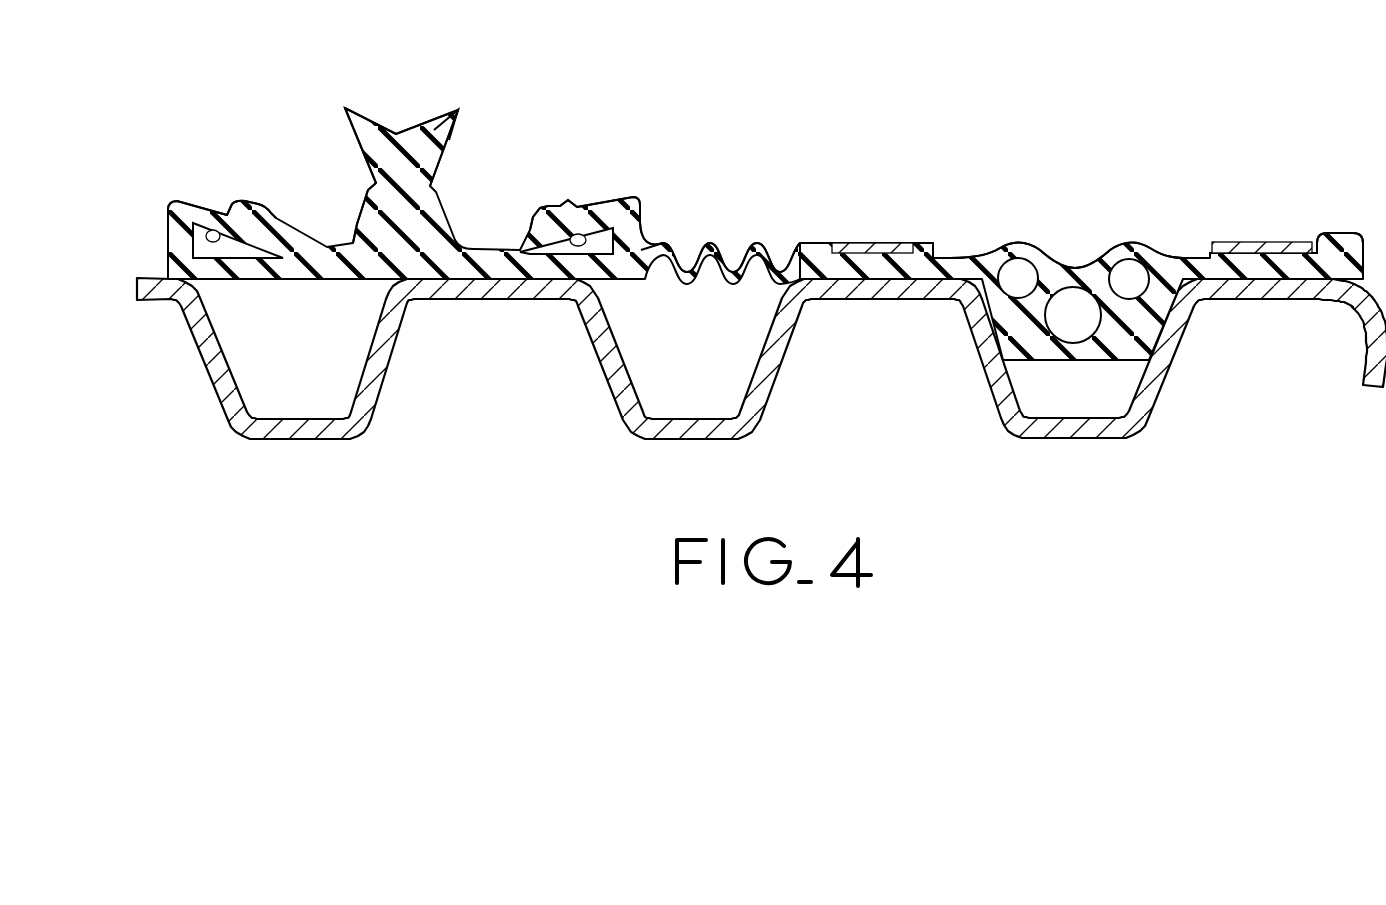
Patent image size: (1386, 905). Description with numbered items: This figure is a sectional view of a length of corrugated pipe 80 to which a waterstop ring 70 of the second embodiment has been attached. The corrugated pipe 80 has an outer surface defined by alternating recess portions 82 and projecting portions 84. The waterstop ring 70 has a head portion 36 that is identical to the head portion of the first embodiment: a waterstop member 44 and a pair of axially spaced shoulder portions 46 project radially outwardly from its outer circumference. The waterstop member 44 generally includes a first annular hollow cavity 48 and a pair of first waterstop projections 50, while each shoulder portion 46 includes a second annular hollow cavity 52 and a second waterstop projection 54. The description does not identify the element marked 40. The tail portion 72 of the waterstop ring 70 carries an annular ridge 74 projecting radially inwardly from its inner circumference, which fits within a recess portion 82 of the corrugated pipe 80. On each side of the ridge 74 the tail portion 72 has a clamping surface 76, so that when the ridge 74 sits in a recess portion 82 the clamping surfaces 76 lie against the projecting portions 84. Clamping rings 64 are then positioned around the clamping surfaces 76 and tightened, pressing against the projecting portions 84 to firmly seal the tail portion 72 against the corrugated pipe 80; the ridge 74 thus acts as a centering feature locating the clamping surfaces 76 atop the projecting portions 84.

The head portion 36 is at (284, 170).
The corrugated web section 40 is at (742, 240).
The waterstop member 44 is at (397, 132).
The shoulder portions 46 is at (177, 237).
The first annular hollow cavity 48 is at (362, 220).
The first waterstop projections 50 is at (460, 117).
The second annular hollow cavities 52 is at (192, 228).
The second waterstop projections 54 is at (253, 199).
The clamping rings 64 is at (884, 241).
The waterstop ring 70 is at (1081, 267).
The tail portion 72 is at (999, 207).
The annular ridge 74 is at (1057, 270).
The clamping surfaces 76 is at (840, 254).
The corrugated pipe 80 is at (1166, 472).
The recess portions 82 is at (1060, 412).
The projecting portions 84 is at (876, 289).